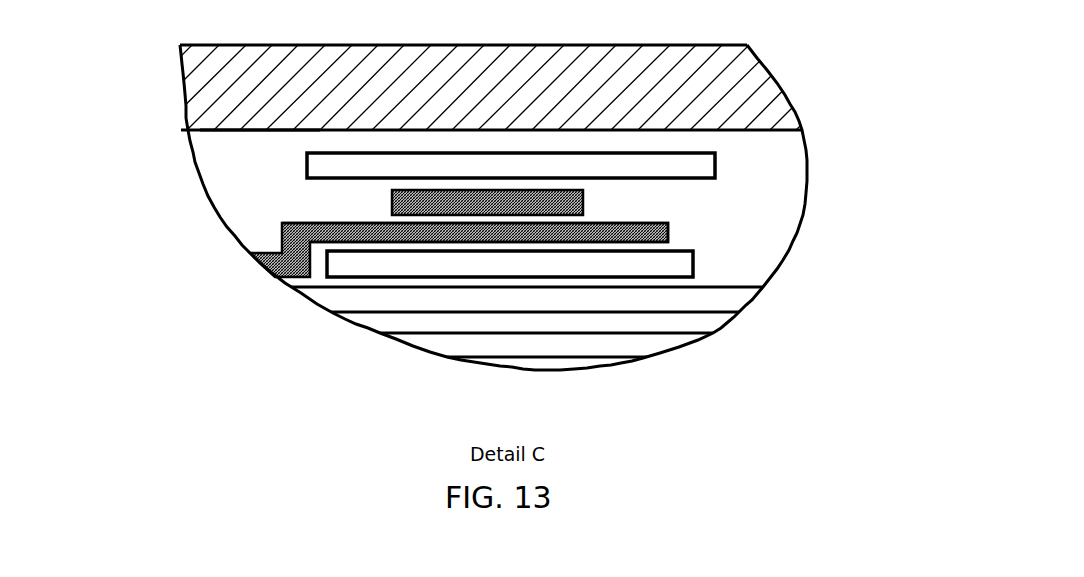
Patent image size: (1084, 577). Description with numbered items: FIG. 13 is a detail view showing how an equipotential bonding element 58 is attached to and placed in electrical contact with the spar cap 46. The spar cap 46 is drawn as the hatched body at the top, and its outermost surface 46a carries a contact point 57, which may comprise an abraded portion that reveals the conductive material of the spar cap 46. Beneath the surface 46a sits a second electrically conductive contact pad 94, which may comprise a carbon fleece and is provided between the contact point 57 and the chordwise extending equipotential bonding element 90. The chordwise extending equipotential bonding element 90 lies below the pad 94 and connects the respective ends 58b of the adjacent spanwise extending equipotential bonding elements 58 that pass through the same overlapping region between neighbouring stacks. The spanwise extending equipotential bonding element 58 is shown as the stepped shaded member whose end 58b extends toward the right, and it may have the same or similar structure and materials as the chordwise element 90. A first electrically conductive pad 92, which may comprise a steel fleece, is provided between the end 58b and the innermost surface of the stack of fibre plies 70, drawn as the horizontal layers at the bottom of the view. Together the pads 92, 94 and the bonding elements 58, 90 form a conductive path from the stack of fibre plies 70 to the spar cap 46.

The spar cap 46 is at (757, 78).
The outermost surface of the spar cap 46a is at (263, 137).
The contact point 57 is at (755, 143).
The second electrically conductive contact pad 94 is at (307, 165).
The chordwise extending equipotential bonding element 90 is at (392, 198).
The spanwise extending equipotential bonding element 58 is at (277, 280).
The end of the spanwise extending equipotential bonding element 58b is at (668, 235).
The first electrically conductive pad 92 is at (665, 265).
The stack of fibre plies 70 is at (587, 333).